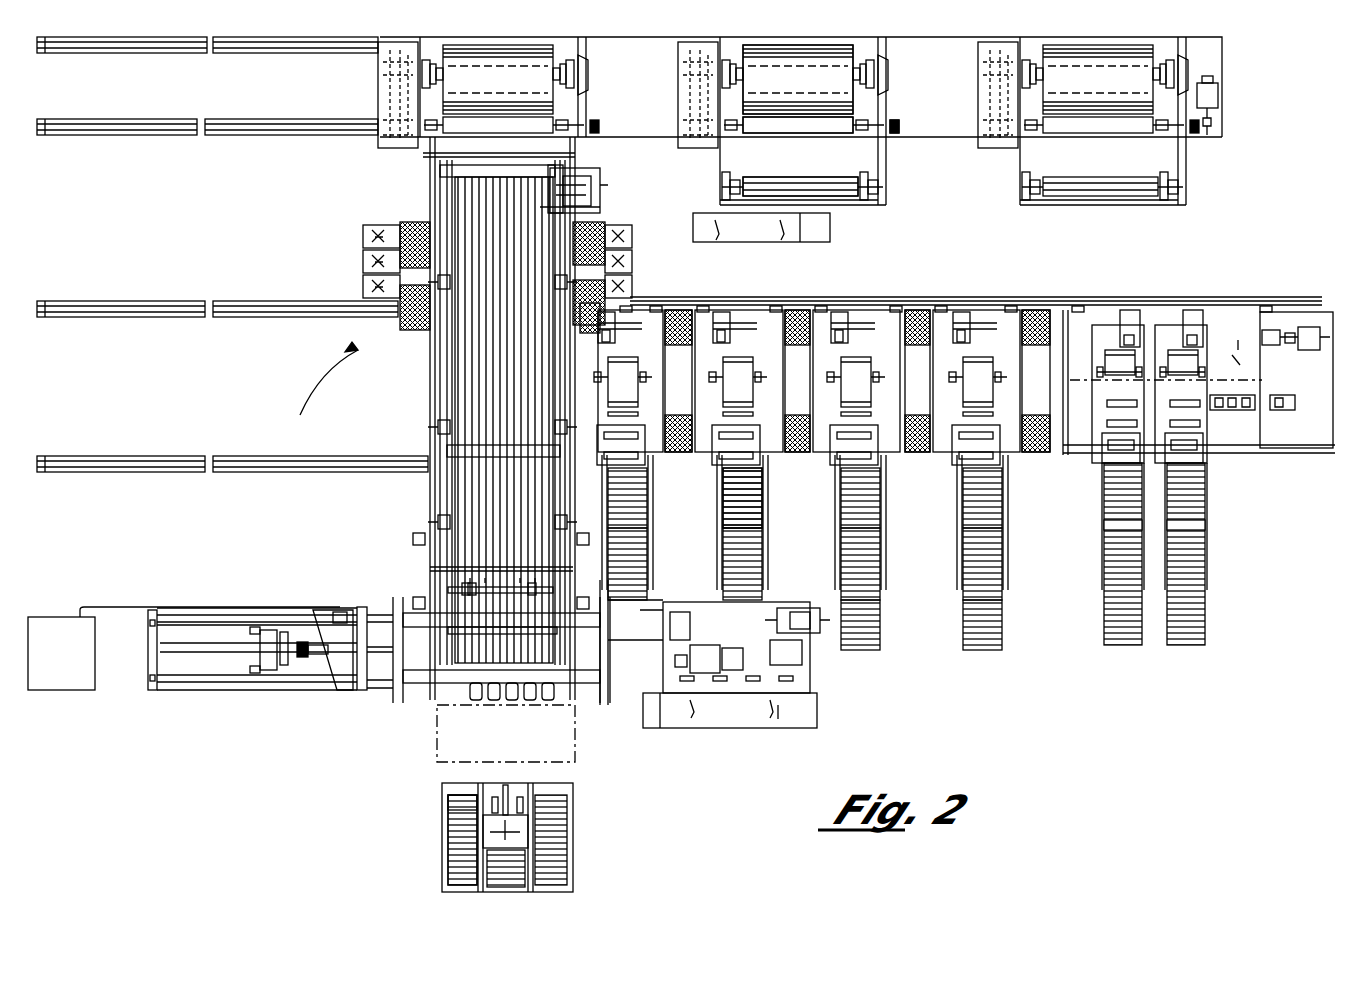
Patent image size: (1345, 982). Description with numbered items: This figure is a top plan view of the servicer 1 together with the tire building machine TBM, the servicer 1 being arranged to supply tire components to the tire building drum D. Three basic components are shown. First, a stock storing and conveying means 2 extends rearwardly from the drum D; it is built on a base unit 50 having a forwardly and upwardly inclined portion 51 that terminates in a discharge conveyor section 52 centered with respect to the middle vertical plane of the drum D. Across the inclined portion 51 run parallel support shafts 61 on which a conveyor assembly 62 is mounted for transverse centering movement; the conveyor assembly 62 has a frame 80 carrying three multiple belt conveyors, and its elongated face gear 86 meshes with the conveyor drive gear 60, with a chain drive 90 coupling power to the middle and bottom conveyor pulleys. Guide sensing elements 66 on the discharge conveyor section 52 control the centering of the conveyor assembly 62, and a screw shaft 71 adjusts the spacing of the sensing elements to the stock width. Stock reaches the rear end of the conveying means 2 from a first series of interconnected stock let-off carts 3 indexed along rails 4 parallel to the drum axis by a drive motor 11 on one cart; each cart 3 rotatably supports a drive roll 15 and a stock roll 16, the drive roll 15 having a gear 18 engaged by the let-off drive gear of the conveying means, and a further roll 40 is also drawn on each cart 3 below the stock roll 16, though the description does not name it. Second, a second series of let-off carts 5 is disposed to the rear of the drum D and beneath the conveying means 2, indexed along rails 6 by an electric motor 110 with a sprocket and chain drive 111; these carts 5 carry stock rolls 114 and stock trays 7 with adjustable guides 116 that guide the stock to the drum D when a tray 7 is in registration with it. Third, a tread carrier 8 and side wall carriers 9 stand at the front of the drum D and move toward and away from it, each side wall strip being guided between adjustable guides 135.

The servicer 1 is at (321, 384).
The stock storing and conveying means 2 is at (432, 393).
The stock let-off units or carts 3 is at (680, 90).
The rails 4 is at (268, 128).
The stock let-off units or carts 5 is at (650, 312).
The rails 6 is at (188, 317).
The stock trays 7 is at (630, 560).
The tread carrier 8 is at (485, 873).
The side wall carriers 9 is at (455, 833).
The drive motor 11 is at (1216, 97).
The drive roll 15 is at (818, 128).
The stock roll 16 is at (795, 45).
The gear 18 is at (900, 127).
The roller 40 is at (840, 197).
The base unit 50 is at (403, 222).
The forwardly and upwardly inclined portion 51 is at (432, 482).
The discharge conveyor section 52 is at (556, 657).
The conveyor drive gear 60 is at (596, 196).
The support shafts 61 is at (578, 283).
The conveyor assembly 62 is at (470, 357).
The guide sensing elements 66 is at (470, 585).
The screw shaft 71 is at (466, 592).
The frame 80 is at (447, 330).
The elongated face gear 86 is at (580, 175).
The chain drive 90 is at (590, 208).
The electric motor 110 is at (1303, 327).
The sprocket and chain drive 111 is at (1230, 378).
The stock rolls 114 is at (630, 377).
The adjustable guides 116 is at (748, 502).
The adjustable guides 135 is at (460, 816).
The tire building drum D is at (468, 662).
The tire building machine TBM is at (252, 695).